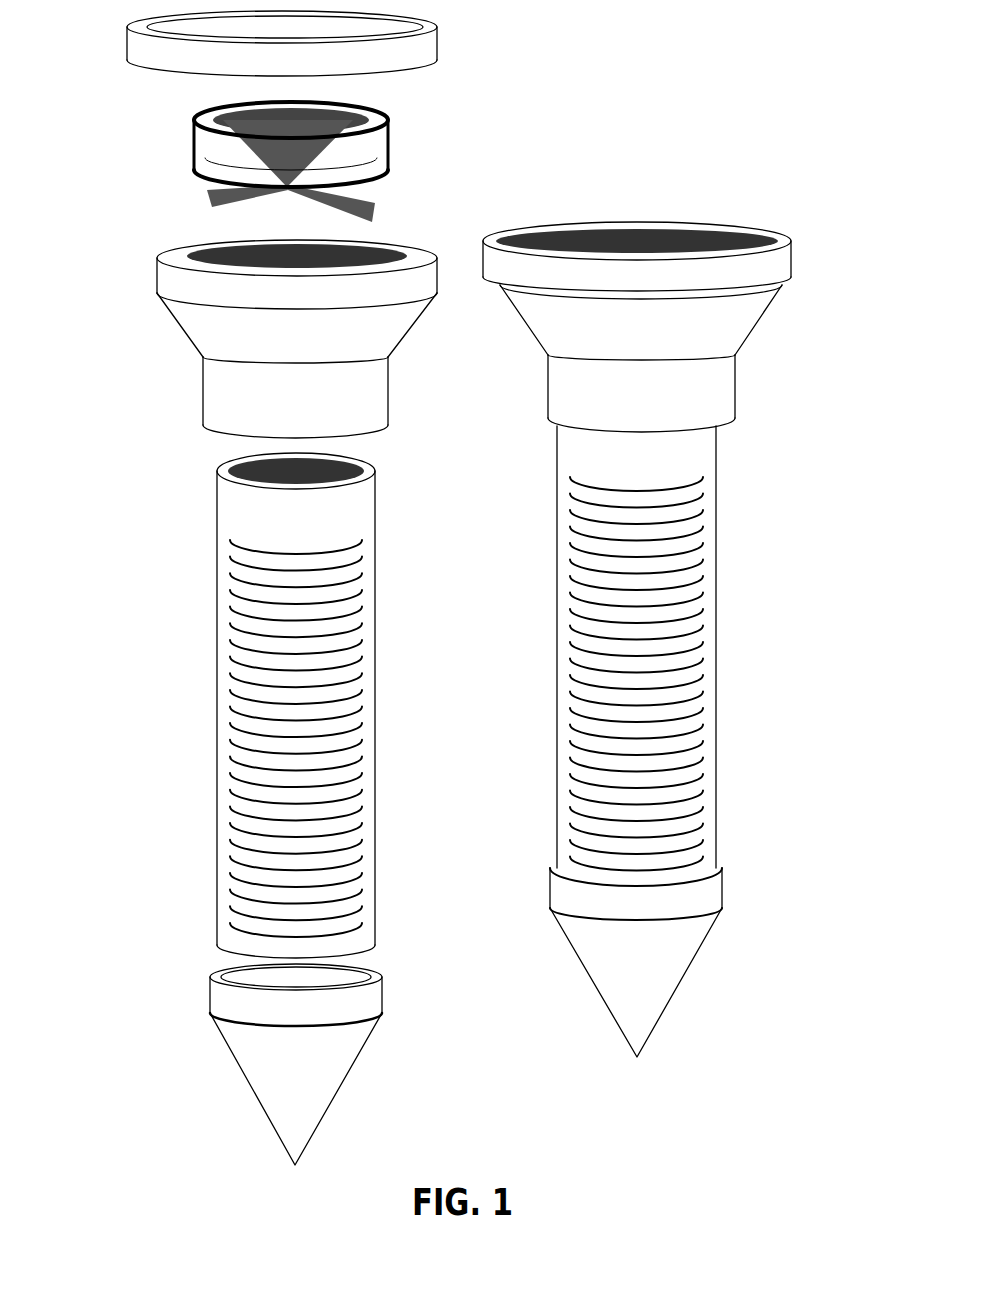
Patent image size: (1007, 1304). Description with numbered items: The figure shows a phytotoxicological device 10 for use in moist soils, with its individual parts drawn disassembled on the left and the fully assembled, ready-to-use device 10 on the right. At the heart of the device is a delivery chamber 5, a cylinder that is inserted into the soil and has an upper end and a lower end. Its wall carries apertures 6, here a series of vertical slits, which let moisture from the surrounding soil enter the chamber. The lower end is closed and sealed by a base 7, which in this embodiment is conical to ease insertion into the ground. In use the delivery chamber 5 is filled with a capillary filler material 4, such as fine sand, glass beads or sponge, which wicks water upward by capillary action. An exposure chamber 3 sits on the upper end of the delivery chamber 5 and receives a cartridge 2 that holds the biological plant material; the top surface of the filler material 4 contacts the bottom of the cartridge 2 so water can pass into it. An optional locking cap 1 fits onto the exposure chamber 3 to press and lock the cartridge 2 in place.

The locking cap 1 is at (108, 45).
The cartridge 2 is at (174, 148).
The exposure chamber 3 is at (226, 328).
The capillary filler material 4 is at (261, 465).
The delivery chamber 5 is at (216, 687).
The apertures 6 is at (218, 885).
The base 7 is at (222, 1052).
The phytotoxicological device 10 is at (746, 471).